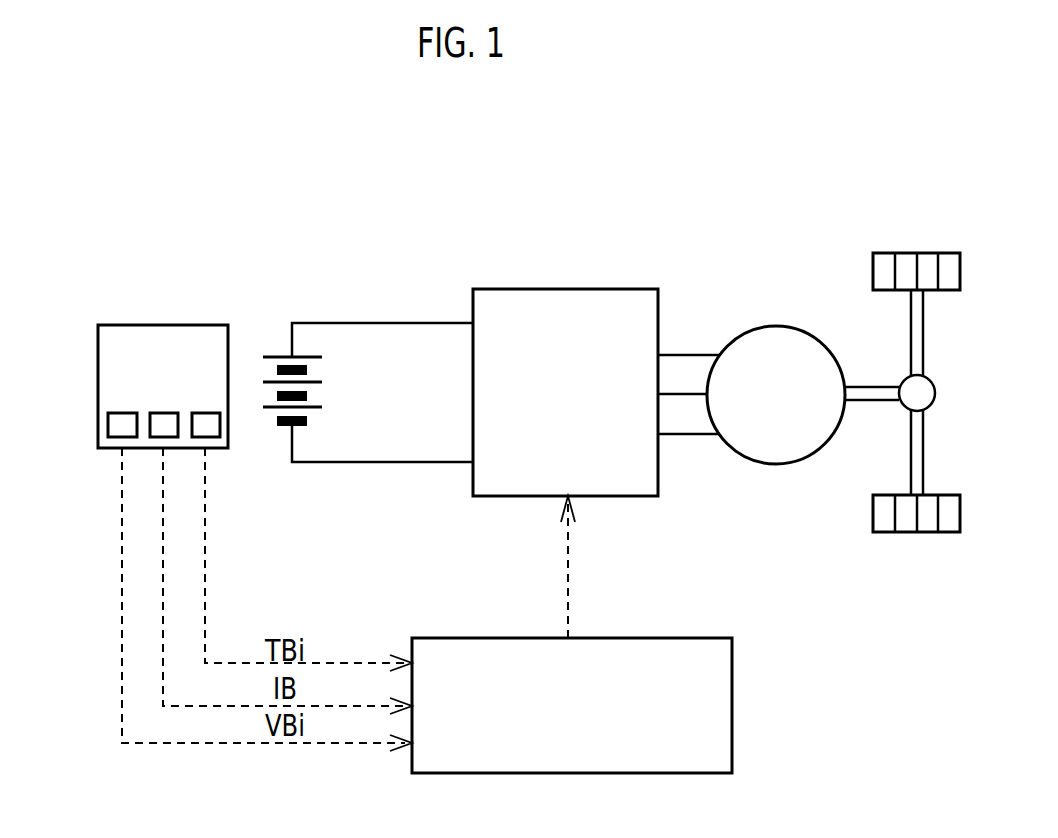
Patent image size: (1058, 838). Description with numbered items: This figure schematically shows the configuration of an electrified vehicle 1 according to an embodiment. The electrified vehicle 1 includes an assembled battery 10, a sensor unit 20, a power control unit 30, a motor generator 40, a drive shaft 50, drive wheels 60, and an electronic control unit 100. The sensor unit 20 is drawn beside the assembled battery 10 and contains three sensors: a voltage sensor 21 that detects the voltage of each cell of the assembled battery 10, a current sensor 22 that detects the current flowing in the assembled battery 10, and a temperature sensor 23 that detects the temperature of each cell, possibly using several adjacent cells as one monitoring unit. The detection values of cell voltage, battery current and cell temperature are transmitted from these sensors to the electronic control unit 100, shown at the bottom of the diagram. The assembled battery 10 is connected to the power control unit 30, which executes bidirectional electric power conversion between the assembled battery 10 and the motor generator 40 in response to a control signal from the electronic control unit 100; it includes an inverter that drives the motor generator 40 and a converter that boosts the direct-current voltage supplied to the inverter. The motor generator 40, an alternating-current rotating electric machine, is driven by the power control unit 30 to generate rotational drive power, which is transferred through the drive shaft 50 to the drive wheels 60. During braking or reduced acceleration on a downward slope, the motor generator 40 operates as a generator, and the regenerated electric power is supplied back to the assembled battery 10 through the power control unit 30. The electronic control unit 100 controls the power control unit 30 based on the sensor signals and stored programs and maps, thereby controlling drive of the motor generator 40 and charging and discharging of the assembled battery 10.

The electrified vehicle 1 is at (229, 218).
The assembled battery 10 is at (276, 356).
The sensor unit 20 is at (163, 325).
The voltage sensor 21 is at (108, 428).
The current sensor 22 is at (156, 438).
The temperature sensor 23 is at (207, 440).
The power control unit 30 is at (567, 289).
The motor generator 40 is at (775, 326).
The drive shaft 50 is at (873, 387).
The drive wheels 60 is at (928, 253).
The electronic control unit 100 is at (732, 695).